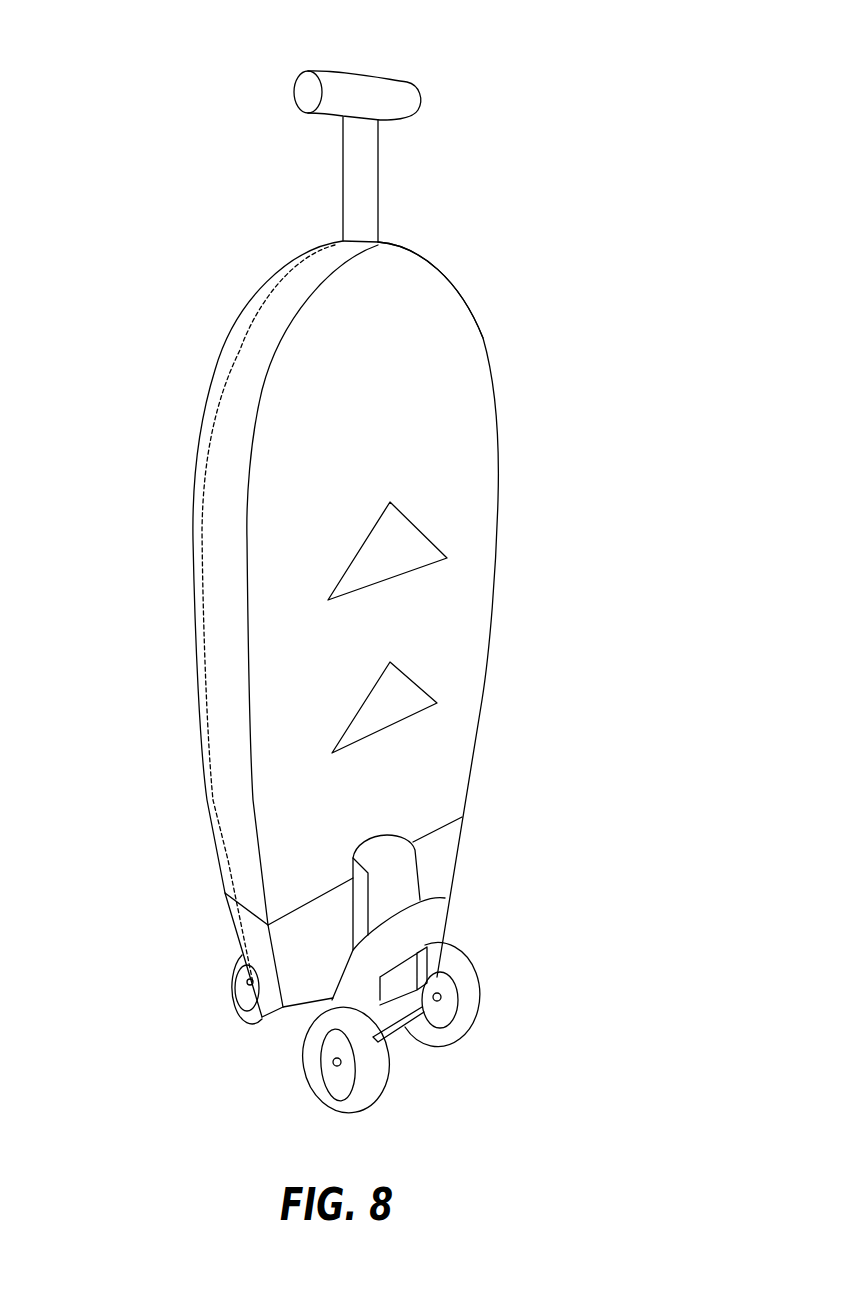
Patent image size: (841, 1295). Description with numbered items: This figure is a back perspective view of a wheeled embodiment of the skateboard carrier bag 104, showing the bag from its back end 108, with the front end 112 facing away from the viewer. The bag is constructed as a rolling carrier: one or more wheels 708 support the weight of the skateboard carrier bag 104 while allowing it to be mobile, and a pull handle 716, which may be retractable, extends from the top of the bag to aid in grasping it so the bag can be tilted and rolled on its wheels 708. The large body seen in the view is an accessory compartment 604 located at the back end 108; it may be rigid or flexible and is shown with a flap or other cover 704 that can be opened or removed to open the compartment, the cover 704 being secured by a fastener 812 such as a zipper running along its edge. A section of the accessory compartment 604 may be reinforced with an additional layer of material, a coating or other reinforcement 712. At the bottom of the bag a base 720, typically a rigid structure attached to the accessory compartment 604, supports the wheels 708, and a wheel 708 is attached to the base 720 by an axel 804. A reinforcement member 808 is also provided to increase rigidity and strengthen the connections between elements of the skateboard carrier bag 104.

The skateboard carrier bag 104 is at (476, 213).
The back end 108 is at (469, 468).
The front end 112 is at (159, 516).
The accessory compartment 604 is at (483, 338).
The cover 704 is at (203, 771).
The wheel 708 is at (466, 945).
The reinforcement 712 is at (445, 820).
The pull handle 716 is at (377, 70).
The base 720 is at (428, 898).
The axel 804 is at (400, 1040).
The reinforcement member 808 is at (378, 834).
The fastener 812 is at (198, 709).